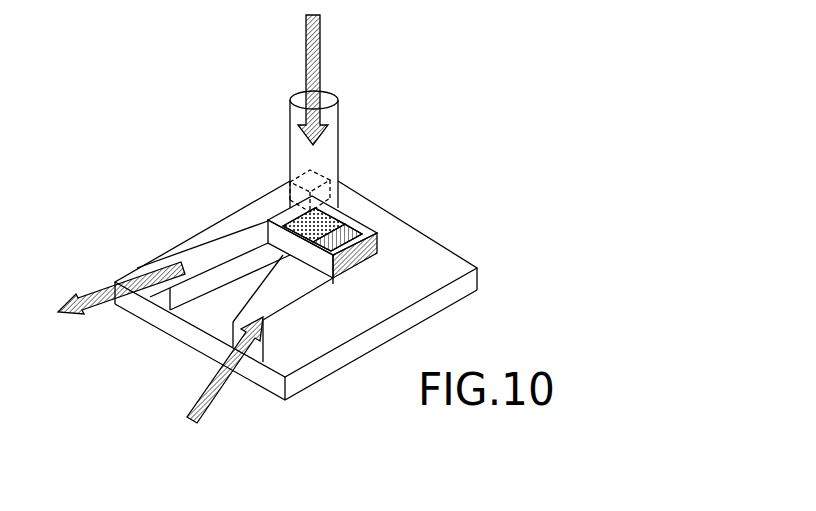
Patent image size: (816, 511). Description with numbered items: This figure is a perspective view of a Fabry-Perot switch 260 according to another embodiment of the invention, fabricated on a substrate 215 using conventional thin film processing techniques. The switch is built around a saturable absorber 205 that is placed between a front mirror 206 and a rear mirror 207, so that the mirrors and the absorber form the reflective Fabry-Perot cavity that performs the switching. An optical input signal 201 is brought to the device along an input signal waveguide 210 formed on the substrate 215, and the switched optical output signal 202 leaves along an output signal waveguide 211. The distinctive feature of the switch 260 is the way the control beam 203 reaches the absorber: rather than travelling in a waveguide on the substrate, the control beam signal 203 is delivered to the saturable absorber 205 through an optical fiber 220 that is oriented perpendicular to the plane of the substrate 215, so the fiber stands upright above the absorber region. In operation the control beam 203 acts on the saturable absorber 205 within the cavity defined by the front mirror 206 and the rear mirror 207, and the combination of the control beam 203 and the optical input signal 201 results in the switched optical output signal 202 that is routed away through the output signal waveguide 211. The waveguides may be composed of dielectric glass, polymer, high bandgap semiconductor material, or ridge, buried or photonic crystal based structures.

The optical input signal 201 is at (207, 413).
The switched optical output signal 202 is at (88, 312).
The control beam 203 is at (322, 42).
The saturable absorber 205 is at (370, 268).
The front mirror 206 is at (328, 292).
The rear mirror 207 is at (382, 245).
The input signal waveguide 210 is at (276, 332).
The output signal waveguide 211 is at (208, 261).
The substrate 215 is at (477, 282).
The optical fiber 220 is at (320, 175).
The Fabry-Perot switch 260 is at (462, 196).